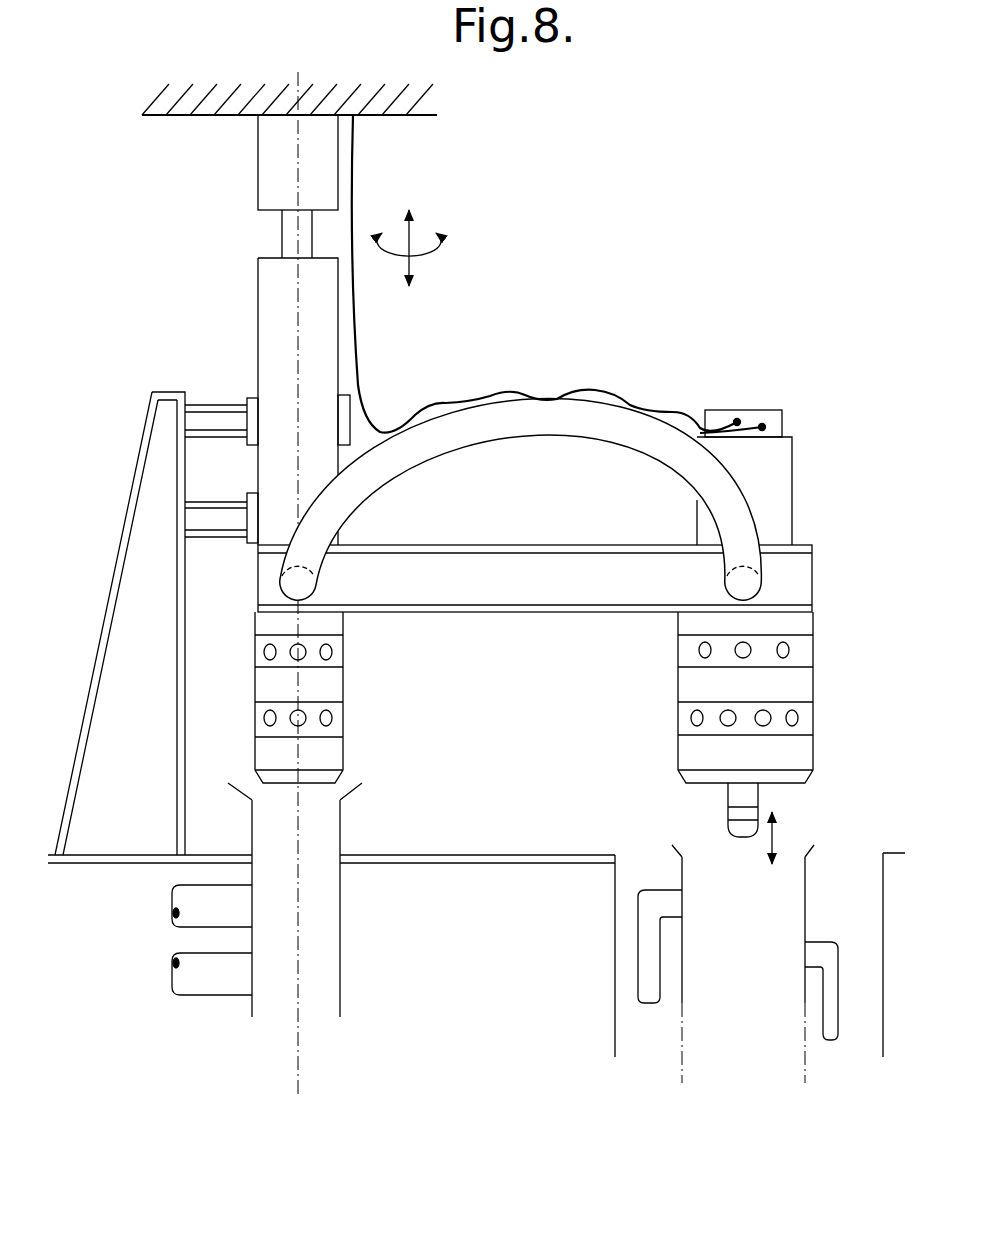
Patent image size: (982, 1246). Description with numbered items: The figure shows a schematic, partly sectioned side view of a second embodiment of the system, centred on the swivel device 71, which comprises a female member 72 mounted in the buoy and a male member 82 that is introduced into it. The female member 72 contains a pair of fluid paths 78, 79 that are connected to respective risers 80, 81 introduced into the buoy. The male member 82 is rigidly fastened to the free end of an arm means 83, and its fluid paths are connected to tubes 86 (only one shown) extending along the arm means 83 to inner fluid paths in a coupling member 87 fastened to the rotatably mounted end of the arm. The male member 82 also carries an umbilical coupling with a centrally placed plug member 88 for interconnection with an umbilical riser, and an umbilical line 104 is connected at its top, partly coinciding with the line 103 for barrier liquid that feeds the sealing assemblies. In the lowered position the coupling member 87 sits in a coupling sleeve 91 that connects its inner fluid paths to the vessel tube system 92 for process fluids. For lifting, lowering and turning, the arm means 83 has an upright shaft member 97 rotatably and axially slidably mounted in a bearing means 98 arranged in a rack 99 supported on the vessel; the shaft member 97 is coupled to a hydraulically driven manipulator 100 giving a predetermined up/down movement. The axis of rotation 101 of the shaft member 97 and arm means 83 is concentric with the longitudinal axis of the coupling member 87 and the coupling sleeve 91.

The swivel device 71 is at (810, 814).
The female member 72 is at (812, 877).
The fluid path 78 is at (675, 893).
The fluid path 79 is at (810, 945).
The riser 80 is at (647, 962).
The riser 81 is at (840, 1022).
The male member 82 is at (816, 683).
The arm means 83 is at (530, 590).
The tube 86 is at (485, 432).
The coupling member 87 is at (335, 688).
The plug member 88 is at (735, 800).
The coupling sleeve 91 is at (345, 836).
The vessel tube system 92 is at (195, 965).
The shaft member 97 is at (266, 316).
The bearing means 98 is at (251, 438).
The rack 99 is at (122, 532).
The hydraulically driven manipulator 100 is at (270, 160).
The axis of rotation 101 is at (297, 360).
The line for barrier liquid 103 is at (357, 335).
The umbilical line 104 is at (727, 420).